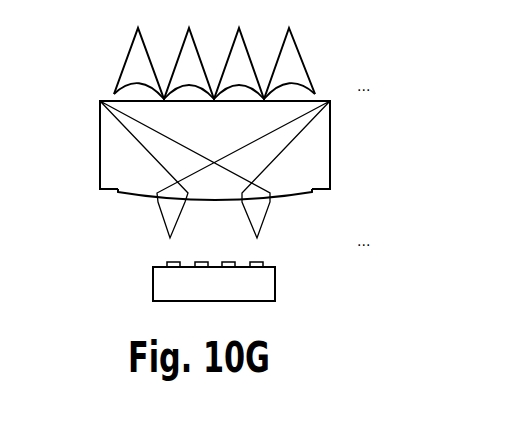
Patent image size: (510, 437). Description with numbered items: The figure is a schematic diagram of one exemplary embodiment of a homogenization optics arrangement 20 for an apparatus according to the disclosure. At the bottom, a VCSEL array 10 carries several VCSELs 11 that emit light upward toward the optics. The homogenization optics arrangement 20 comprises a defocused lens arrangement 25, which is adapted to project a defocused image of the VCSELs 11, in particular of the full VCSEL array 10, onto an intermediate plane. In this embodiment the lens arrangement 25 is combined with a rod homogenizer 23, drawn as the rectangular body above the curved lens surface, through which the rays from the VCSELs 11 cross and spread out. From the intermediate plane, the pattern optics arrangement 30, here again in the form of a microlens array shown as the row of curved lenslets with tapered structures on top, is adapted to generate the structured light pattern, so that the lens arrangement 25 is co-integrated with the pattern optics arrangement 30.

The VCSEL array 10 is at (153, 282).
The VCSELs 11 is at (263, 262).
The homogenization optics arrangement 20 is at (219, 133).
The rod homogenizer 23 is at (318, 147).
The lens arrangement 25 is at (302, 195).
The pattern optics arrangement 30 is at (95, 70).